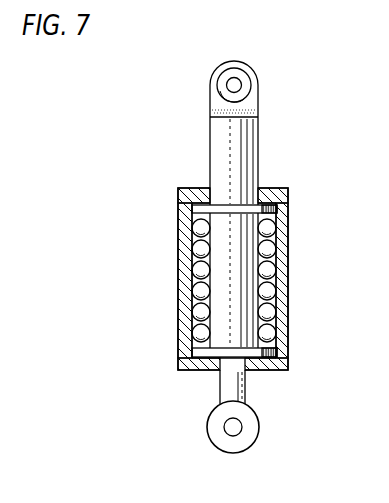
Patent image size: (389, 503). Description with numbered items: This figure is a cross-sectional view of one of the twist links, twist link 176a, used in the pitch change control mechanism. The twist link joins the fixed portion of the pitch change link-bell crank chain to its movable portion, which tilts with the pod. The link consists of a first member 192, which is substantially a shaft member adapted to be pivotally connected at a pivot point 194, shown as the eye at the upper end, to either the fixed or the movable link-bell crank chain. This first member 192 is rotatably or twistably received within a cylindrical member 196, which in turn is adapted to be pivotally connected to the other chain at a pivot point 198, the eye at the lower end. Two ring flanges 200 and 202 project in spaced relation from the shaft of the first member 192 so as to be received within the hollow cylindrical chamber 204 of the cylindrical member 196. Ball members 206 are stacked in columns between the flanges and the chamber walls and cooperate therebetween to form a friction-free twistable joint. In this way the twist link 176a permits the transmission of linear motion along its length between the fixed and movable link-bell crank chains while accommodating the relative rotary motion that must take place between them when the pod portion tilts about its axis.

The twist link 176a is at (270, 153).
The first member 192 is at (215, 136).
The pivot point 194 is at (238, 80).
The cylindrical member 196 is at (286, 266).
The pivot point 198 is at (233, 430).
The ring flange 200 is at (192, 207).
The ring flange 202 is at (192, 351).
The hollow cylindrical chamber 204 is at (276, 350).
The ball members 206 is at (198, 252).